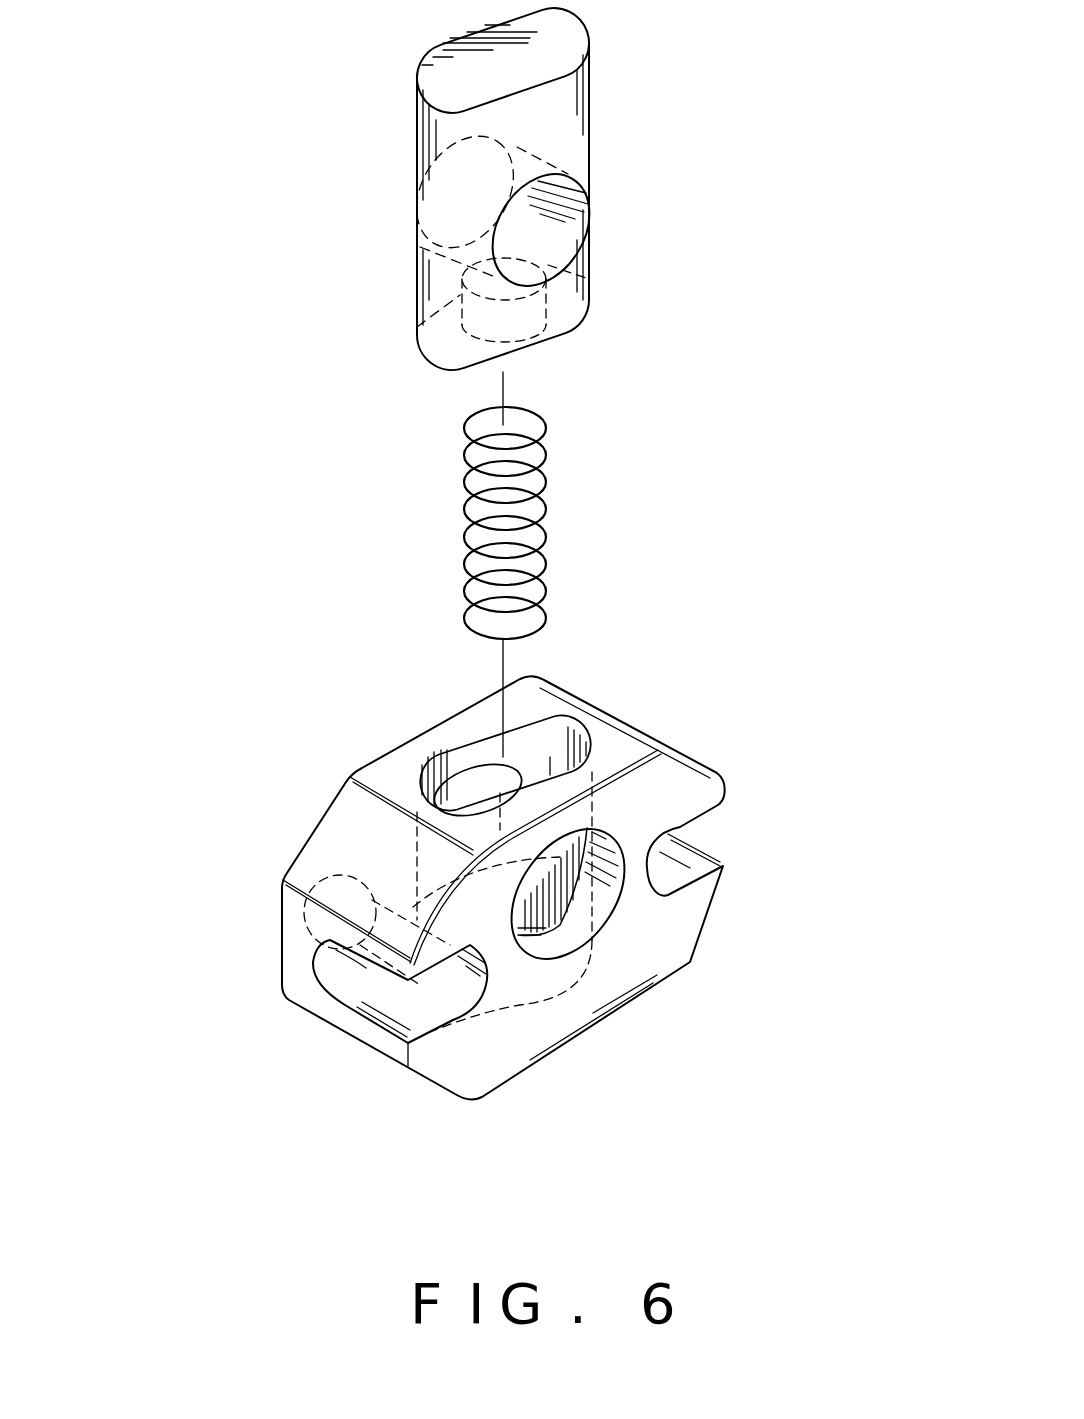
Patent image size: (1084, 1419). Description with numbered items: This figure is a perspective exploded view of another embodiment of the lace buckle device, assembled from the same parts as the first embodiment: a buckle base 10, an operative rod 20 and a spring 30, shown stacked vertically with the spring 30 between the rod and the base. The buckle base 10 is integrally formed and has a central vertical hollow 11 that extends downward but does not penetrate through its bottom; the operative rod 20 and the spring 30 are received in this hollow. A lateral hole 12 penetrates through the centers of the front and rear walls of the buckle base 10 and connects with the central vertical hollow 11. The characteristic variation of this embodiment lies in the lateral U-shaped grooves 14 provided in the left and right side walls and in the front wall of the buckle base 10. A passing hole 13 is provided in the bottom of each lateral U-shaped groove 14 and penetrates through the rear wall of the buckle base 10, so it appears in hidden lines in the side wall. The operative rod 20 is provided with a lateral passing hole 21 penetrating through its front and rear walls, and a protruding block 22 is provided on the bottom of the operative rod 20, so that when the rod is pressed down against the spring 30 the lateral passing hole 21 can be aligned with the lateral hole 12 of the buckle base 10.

The buckle base 10 is at (732, 740).
The central vertical hollow 11 is at (563, 730).
The lateral hole 12 is at (602, 902).
The passing hole 13 is at (312, 912).
The lateral U-shaped groove 14 is at (417, 1007).
The operative rod 20 is at (578, 131).
The lateral passing hole 21 is at (578, 203).
The protruding block 22 is at (530, 332).
The spring 30 is at (546, 505).